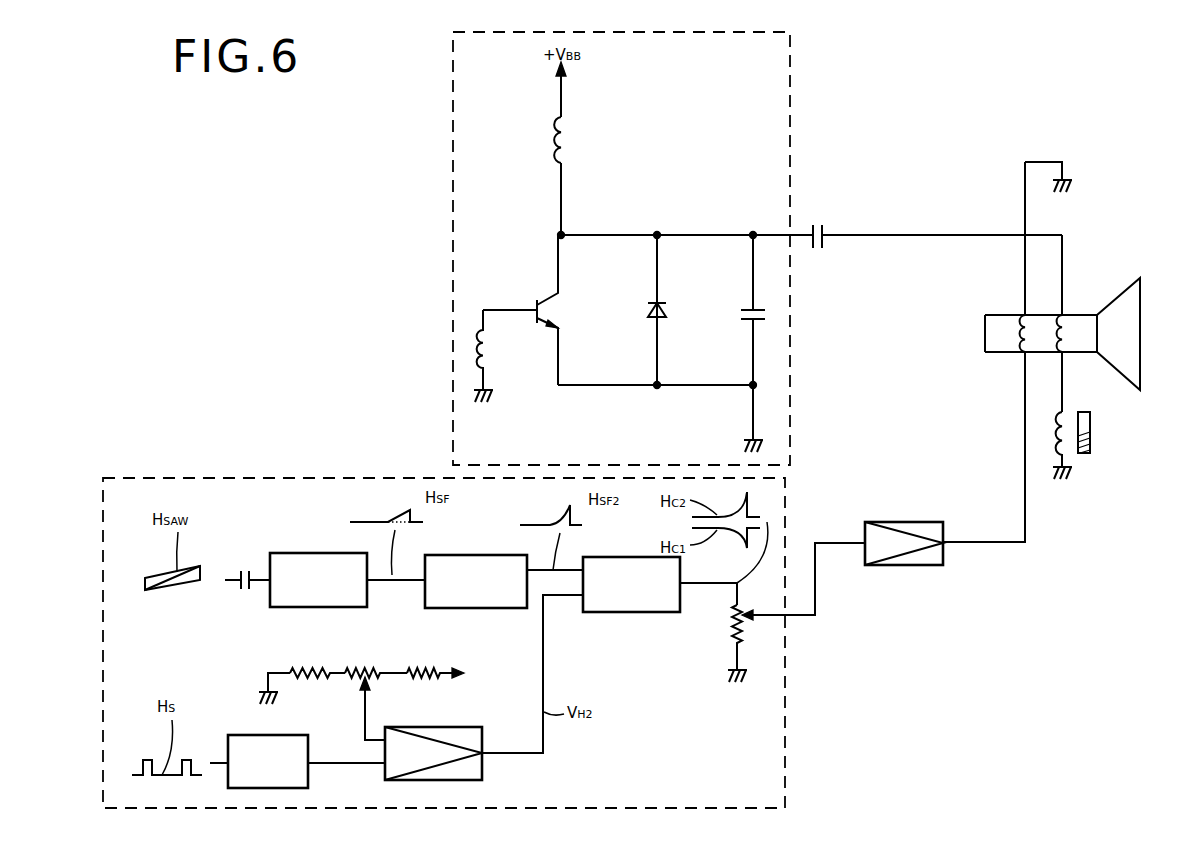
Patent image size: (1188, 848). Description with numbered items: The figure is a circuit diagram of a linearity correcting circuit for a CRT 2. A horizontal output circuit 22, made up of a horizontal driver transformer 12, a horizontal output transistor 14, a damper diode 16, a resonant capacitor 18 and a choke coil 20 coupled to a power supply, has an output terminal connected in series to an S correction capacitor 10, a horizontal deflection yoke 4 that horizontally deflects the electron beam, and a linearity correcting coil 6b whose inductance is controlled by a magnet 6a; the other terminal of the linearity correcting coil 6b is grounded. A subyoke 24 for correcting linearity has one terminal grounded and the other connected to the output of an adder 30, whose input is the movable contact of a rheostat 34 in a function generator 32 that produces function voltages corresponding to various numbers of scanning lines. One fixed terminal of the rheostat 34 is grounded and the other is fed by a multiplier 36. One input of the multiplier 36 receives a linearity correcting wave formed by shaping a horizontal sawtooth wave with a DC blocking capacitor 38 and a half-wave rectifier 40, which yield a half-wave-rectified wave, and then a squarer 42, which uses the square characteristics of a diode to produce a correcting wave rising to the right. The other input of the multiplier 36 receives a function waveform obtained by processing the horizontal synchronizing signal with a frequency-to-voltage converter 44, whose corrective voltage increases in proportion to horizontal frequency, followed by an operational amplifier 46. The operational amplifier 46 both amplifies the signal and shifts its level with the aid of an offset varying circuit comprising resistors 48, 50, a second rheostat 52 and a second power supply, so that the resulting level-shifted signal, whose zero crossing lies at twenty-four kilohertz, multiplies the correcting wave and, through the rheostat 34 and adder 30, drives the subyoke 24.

The CRT 2 is at (1142, 340).
The horizontal deflection yoke 4 is at (1070, 325).
The magnet 6a is at (1090, 424).
The linearity correcting coil 6b is at (1064, 457).
The S correction capacitor 10 is at (822, 221).
The horizontal driver transformer 12 is at (476, 346).
The horizontal output transistor 14 is at (549, 301).
The damper diode 16 is at (664, 308).
The resonant capacitor 18 is at (739, 318).
The choke coil 20 is at (572, 140).
The horizontal output circuit 22 is at (790, 158).
The subyoke 24 is at (1008, 326).
The adder 30 is at (908, 522).
The function generator 32 is at (297, 478).
The rheostat 34 is at (727, 641).
The multiplier 36 is at (620, 557).
The DC blocking capacitor 38 is at (246, 570).
The half-wave rectifier 40 is at (300, 553).
The squarer 42 is at (467, 555).
The frequency-to-voltage converter 44 is at (290, 735).
The operational amplifier 46 is at (425, 727).
The resistor 48 is at (428, 670).
The resistor 50 is at (298, 670).
The second rheostat 52 is at (355, 670).